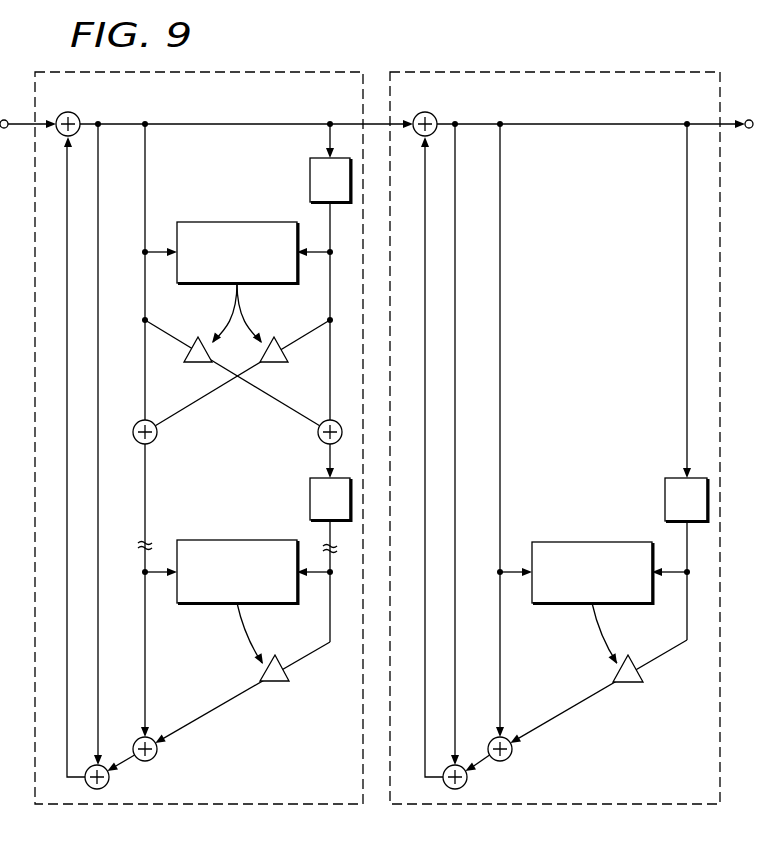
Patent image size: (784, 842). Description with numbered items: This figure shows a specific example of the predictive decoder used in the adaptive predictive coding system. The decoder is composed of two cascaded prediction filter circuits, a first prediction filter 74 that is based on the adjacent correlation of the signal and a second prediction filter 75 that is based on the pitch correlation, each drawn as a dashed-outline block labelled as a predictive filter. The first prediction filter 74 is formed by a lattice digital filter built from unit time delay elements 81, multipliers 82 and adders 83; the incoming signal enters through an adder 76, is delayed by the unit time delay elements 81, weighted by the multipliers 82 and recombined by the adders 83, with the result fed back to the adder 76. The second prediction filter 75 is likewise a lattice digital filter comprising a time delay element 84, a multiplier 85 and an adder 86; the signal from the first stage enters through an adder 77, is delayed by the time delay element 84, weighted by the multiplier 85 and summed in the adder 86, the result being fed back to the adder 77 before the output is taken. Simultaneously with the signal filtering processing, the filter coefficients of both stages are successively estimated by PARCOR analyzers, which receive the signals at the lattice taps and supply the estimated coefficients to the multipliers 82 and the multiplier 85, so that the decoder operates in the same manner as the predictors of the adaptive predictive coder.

The prediction filter 74 is at (314, 72).
The prediction filter 75 is at (677, 72).
The adder 76 is at (77, 113).
The adder 77 is at (433, 113).
The unit time delay element 81 is at (310, 172).
The multiplier 82 is at (198, 363).
The adder 83 is at (157, 436).
The time delay element 84 is at (665, 493).
The multiplier 85 is at (630, 683).
The adder 86 is at (510, 757).